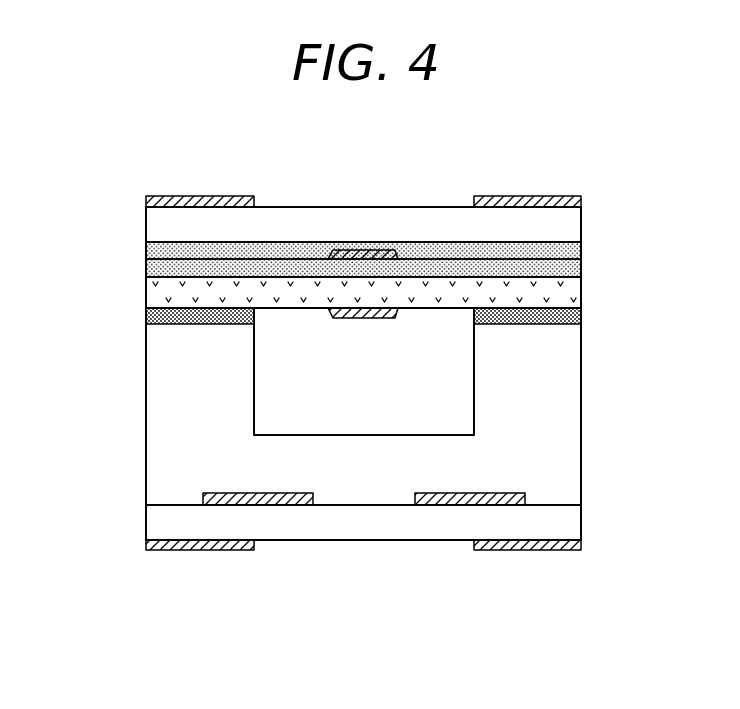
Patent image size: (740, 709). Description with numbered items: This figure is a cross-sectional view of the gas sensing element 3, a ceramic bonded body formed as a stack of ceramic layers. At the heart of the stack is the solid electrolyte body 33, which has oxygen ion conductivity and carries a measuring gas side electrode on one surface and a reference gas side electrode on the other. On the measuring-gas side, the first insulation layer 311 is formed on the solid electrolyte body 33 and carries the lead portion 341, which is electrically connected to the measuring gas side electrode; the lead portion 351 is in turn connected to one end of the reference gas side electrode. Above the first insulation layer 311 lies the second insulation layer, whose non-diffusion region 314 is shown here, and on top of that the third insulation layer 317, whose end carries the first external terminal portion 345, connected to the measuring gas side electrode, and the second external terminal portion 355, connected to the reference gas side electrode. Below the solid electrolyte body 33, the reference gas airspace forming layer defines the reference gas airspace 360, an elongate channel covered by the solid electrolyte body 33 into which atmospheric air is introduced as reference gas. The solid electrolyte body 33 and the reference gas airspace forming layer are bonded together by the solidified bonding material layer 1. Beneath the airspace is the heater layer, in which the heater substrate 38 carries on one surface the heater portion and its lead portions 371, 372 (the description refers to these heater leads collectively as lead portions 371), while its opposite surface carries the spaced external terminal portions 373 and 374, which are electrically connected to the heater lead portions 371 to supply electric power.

The gas sensing element 3 is at (575, 187).
The bonding material layer 1 is at (175, 306).
The first insulation layer 311 is at (182, 264).
The non-diffusion region 314 is at (445, 241).
The third insulation layer 317 is at (291, 218).
The solid electrolyte body 33 is at (583, 295).
The lead portion 341 is at (366, 250).
The first external terminal portion 345 is at (199, 196).
The lead portion 351 is at (352, 320).
The second external terminal portion 355 is at (520, 196).
The reference gas airspace 360 is at (432, 435).
The lead portions 371 is at (483, 493).
The wiring electrode 372 is at (210, 493).
The external terminal portion 373 is at (200, 550).
The external terminal portion 374 is at (527, 550).
The heater substrate 38 is at (343, 520).